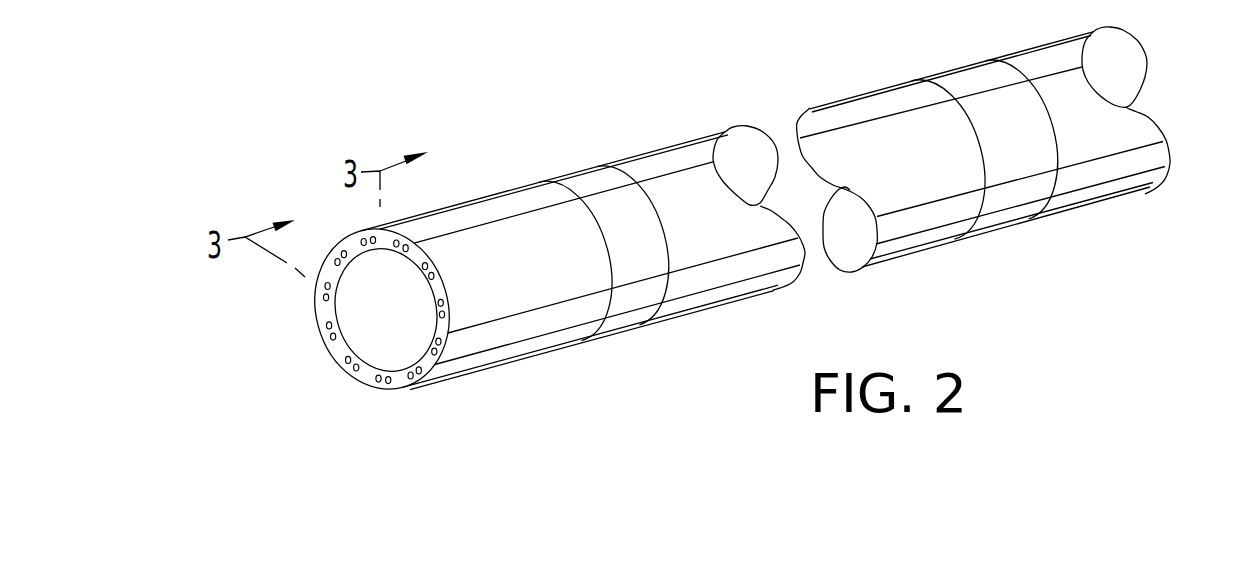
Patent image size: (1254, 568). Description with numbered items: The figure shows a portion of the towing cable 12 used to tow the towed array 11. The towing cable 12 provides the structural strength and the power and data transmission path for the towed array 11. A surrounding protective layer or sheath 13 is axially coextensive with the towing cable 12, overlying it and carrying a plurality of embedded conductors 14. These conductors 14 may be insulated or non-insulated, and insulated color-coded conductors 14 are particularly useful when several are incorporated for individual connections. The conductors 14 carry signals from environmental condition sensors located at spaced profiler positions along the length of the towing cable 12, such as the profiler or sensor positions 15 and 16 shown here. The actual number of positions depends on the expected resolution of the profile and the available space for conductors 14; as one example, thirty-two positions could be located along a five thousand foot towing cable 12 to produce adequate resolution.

The towed array 11 is at (648, 82).
The towing cable 12 is at (392, 345).
The protective sheath 13 is at (867, 92).
The embedded conductors 14 is at (318, 293).
The sensor position 15 is at (625, 307).
The sensor position 16 is at (1012, 198).